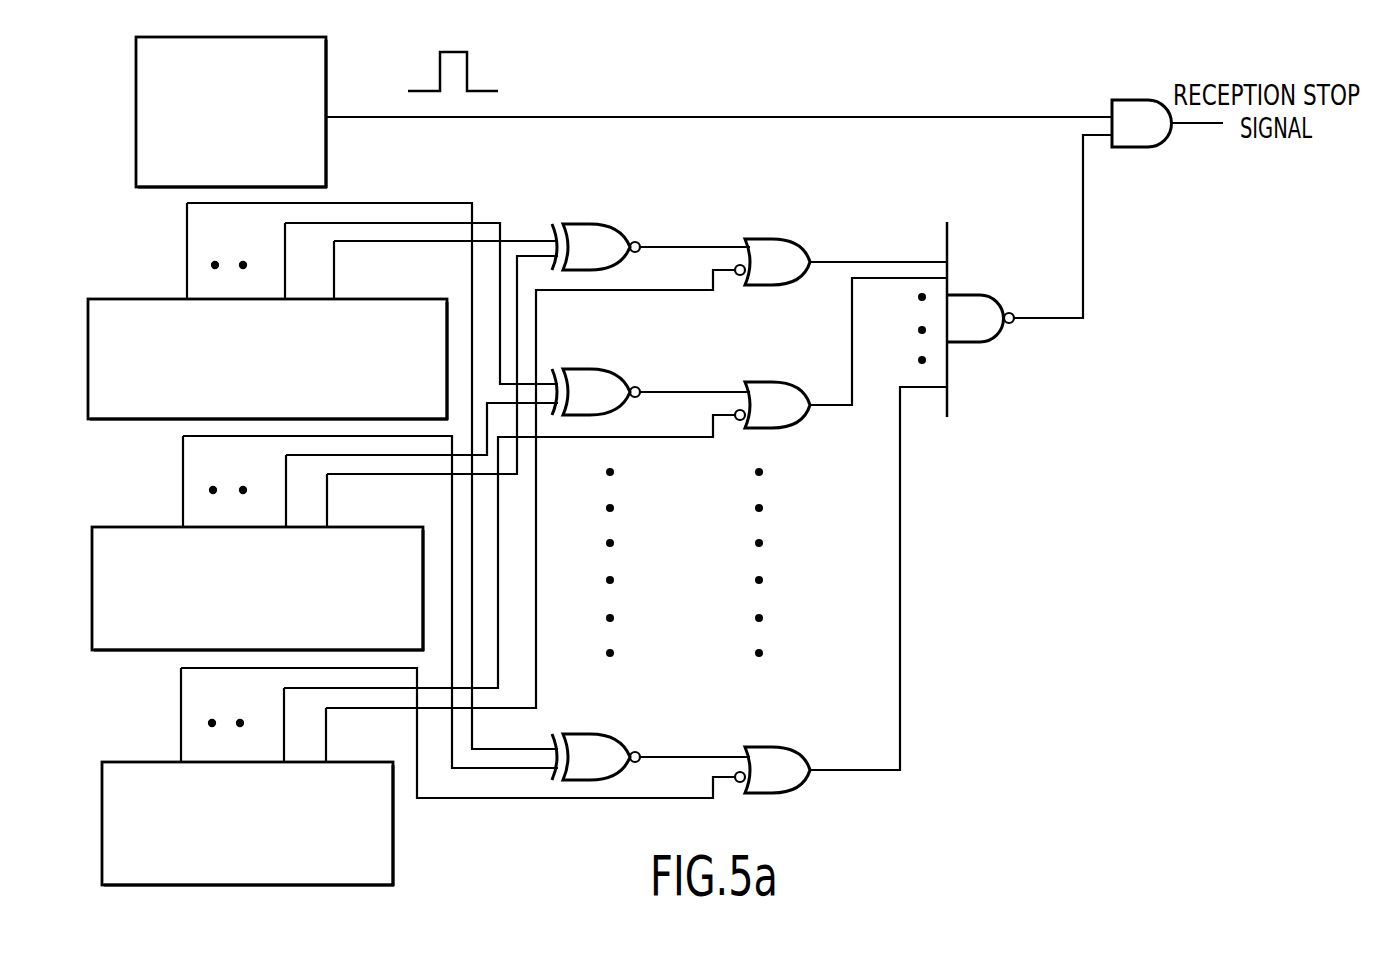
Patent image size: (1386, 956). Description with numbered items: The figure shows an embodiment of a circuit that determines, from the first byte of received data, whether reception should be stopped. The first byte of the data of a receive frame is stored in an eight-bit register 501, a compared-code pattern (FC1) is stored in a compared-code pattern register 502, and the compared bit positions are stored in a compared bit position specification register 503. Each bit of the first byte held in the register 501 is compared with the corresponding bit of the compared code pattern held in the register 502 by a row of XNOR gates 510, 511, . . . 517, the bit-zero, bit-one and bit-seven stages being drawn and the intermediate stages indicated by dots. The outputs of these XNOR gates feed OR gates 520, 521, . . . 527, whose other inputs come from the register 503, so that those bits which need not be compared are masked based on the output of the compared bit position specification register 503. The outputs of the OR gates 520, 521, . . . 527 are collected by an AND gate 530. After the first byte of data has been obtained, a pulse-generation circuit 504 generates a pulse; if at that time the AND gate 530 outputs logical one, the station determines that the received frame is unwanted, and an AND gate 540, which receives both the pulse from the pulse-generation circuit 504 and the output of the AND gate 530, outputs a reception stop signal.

The 8-bit register 501 is at (288, 405).
The compared-code pattern register 502 is at (273, 630).
The compared bit position specification register 503 is at (265, 868).
The pulse-generation circuit 504 is at (247, 175).
The XNOR gate 510 is at (586, 222).
The XNOR gate 511 is at (586, 369).
The XNOR gate 517 is at (586, 734).
The OR gate 520 is at (770, 238).
The OR gate 521 is at (770, 382).
The OR gate 527 is at (770, 747).
The AND gate 530 is at (960, 295).
The AND gate 540 is at (1126, 100).